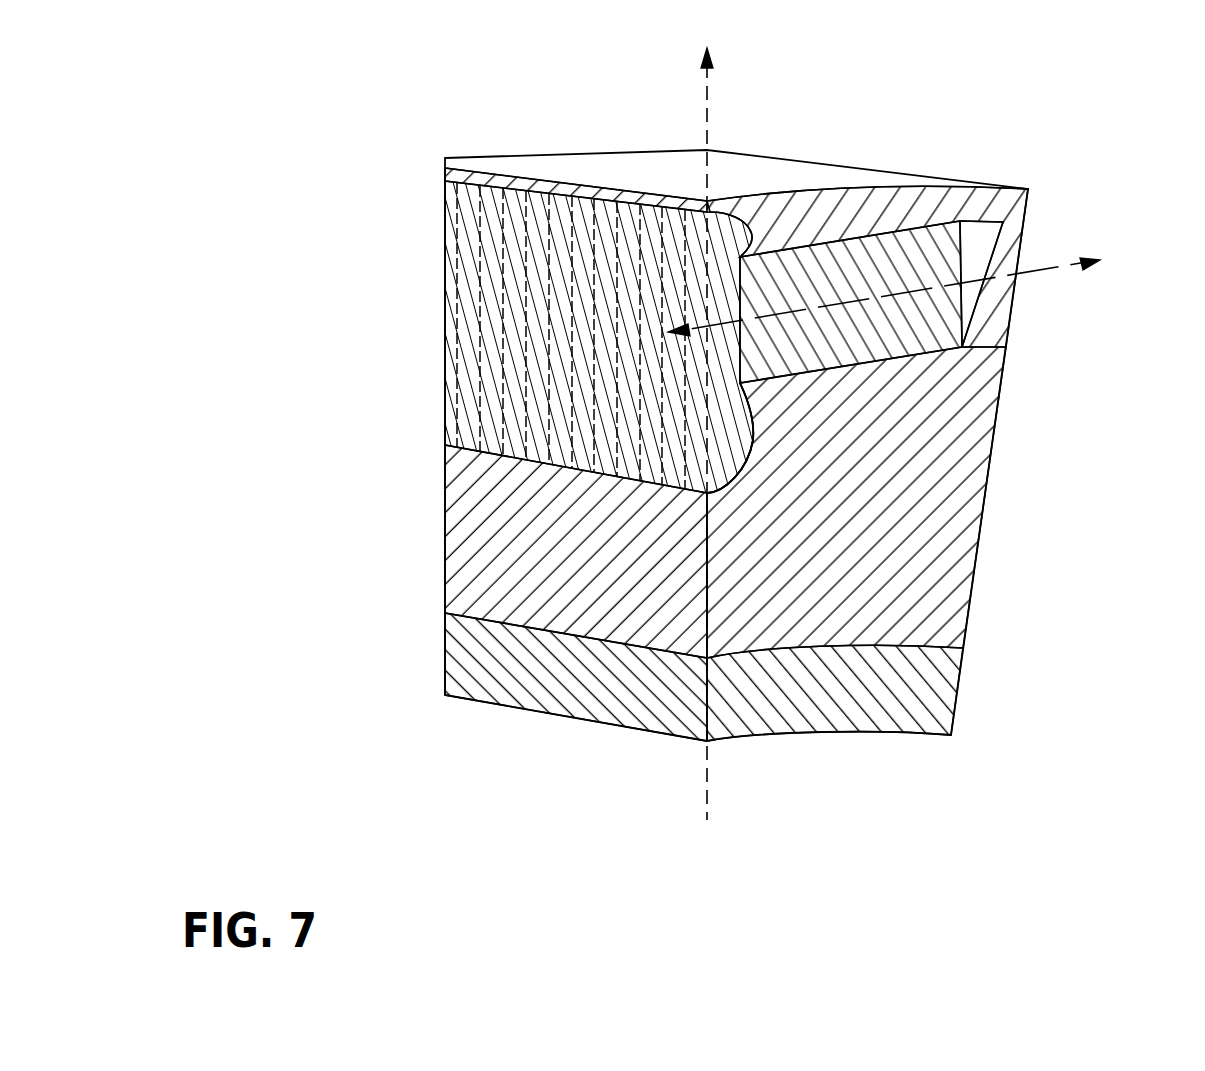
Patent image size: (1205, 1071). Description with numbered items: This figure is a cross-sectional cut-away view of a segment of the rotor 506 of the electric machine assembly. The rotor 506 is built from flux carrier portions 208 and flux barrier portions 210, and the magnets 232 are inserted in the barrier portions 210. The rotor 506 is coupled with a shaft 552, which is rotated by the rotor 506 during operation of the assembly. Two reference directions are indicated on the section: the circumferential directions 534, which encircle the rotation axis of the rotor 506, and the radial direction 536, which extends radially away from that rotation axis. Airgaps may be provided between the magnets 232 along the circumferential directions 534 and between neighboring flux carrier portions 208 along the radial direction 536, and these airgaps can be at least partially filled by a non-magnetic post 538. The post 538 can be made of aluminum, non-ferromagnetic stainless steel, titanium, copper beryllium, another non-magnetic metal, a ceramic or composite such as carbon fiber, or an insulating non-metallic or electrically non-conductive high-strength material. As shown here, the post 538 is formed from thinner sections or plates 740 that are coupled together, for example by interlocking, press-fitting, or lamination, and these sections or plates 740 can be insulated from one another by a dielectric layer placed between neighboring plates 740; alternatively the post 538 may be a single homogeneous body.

The rotor 506 is at (1043, 140).
The flux carrier portions 208 is at (913, 200).
The flux barrier portions 210 is at (534, 158).
The magnets 232 is at (903, 363).
The circumferential directions 534 is at (1063, 272).
The radial direction 536 is at (736, 130).
The non-magnetic post 538 is at (740, 468).
The shaft 552 is at (580, 688).
The sections or plates 740 is at (515, 275).